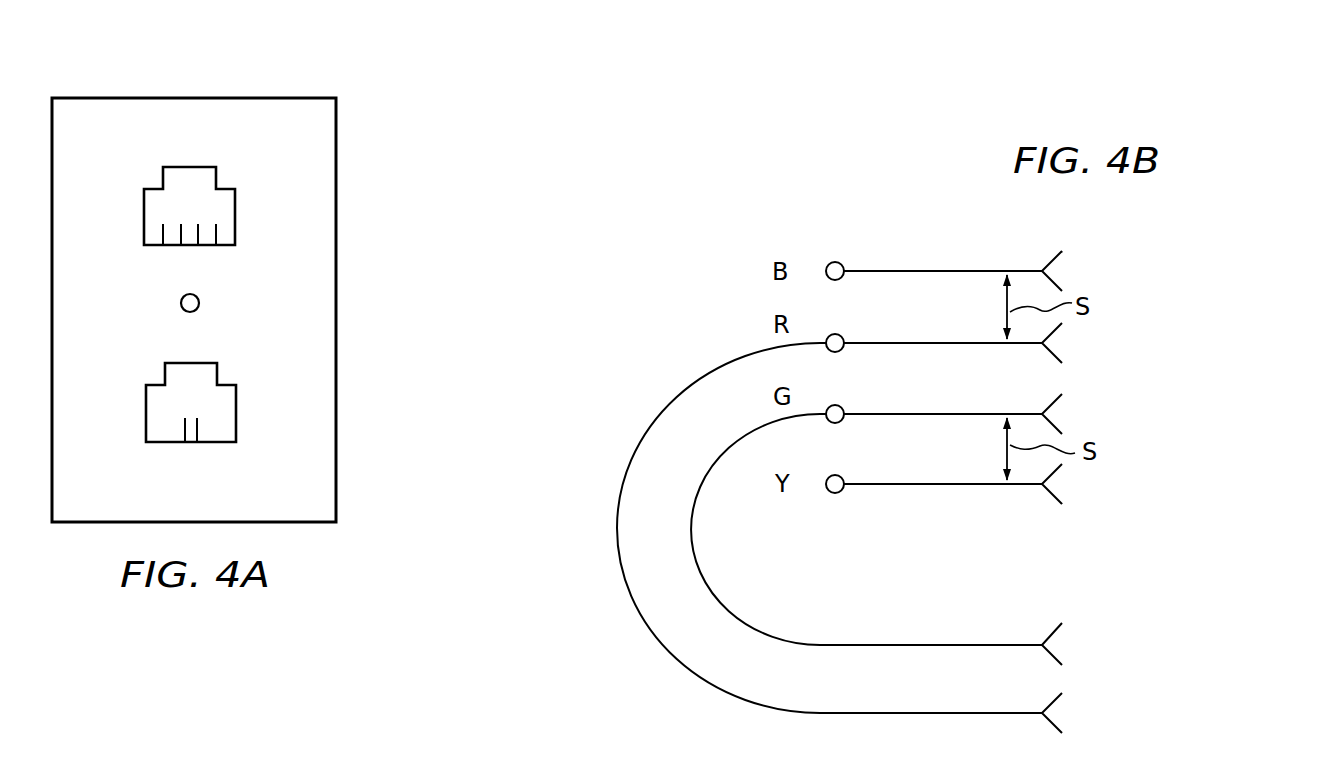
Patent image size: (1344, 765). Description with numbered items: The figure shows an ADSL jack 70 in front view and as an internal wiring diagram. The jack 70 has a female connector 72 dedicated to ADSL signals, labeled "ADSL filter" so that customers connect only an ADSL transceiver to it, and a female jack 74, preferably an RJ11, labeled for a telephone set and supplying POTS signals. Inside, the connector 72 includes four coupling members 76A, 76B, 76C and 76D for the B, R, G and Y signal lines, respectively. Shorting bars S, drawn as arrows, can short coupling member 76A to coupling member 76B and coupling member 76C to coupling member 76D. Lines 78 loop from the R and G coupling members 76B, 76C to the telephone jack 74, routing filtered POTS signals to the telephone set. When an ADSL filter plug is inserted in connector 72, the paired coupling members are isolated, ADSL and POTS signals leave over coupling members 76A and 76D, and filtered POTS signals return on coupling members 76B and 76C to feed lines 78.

In FIG. 4A, the jack 70 is at (398, 101).
In FIG. 4B, the jack 70 is at (1140, 480).
In FIG. 4A, the female connector 72 is at (237, 212).
In FIG. 4B, the female connector 72 is at (1223, 347).
In FIG. 4A, the female jack 74 is at (237, 417).
In FIG. 4B, the female jack 74 is at (1102, 684).
In FIG. 4B, the coupling member 76A is at (913, 253).
In FIG. 4B, the coupling member 76B is at (892, 342).
In FIG. 4B, the coupling member 76C is at (932, 393).
In FIG. 4B, the coupling member 76D is at (905, 483).
In FIG. 4B, the lines 78 is at (617, 522).